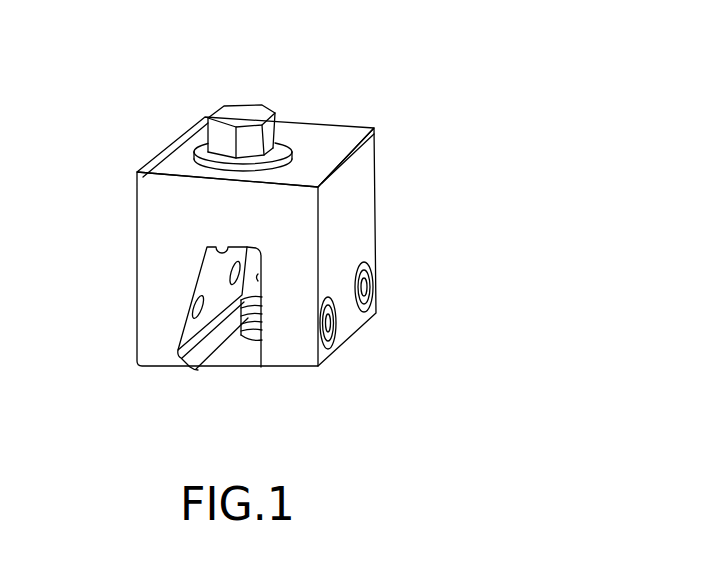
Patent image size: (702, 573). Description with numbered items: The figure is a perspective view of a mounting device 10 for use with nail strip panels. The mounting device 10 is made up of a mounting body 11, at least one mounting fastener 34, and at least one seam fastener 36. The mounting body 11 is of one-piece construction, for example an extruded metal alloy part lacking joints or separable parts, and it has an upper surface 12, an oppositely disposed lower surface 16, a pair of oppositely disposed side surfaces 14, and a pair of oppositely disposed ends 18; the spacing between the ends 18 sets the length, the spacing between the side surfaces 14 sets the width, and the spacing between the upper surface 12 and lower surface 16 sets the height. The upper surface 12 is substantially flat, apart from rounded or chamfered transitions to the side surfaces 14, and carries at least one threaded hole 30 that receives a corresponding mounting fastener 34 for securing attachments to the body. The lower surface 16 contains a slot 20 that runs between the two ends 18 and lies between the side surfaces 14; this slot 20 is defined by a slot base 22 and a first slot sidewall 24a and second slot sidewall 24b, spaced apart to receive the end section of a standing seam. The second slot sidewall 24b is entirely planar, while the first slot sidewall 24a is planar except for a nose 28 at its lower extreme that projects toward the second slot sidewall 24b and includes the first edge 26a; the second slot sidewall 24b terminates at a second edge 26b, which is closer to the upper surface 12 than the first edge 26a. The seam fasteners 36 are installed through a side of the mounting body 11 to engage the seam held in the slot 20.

The mounting device 10 is at (494, 128).
The mounting body 11 is at (412, 127).
The upper surface 12 is at (244, 204).
The side surfaces 14 is at (136, 237).
The lower surface 16 is at (150, 370).
The ends 18 is at (303, 124).
The slot 20 is at (243, 381).
The slot base 22 is at (253, 330).
The first slot sidewall 24a is at (211, 291).
The second slot sidewall 24b is at (262, 277).
The first edge 26a is at (208, 368).
The second edge 26b is at (262, 368).
The nose 28 is at (188, 368).
The threaded hole 30 is at (294, 135).
The mounting fastener 34 is at (242, 107).
The seam fastener 36 is at (375, 288).